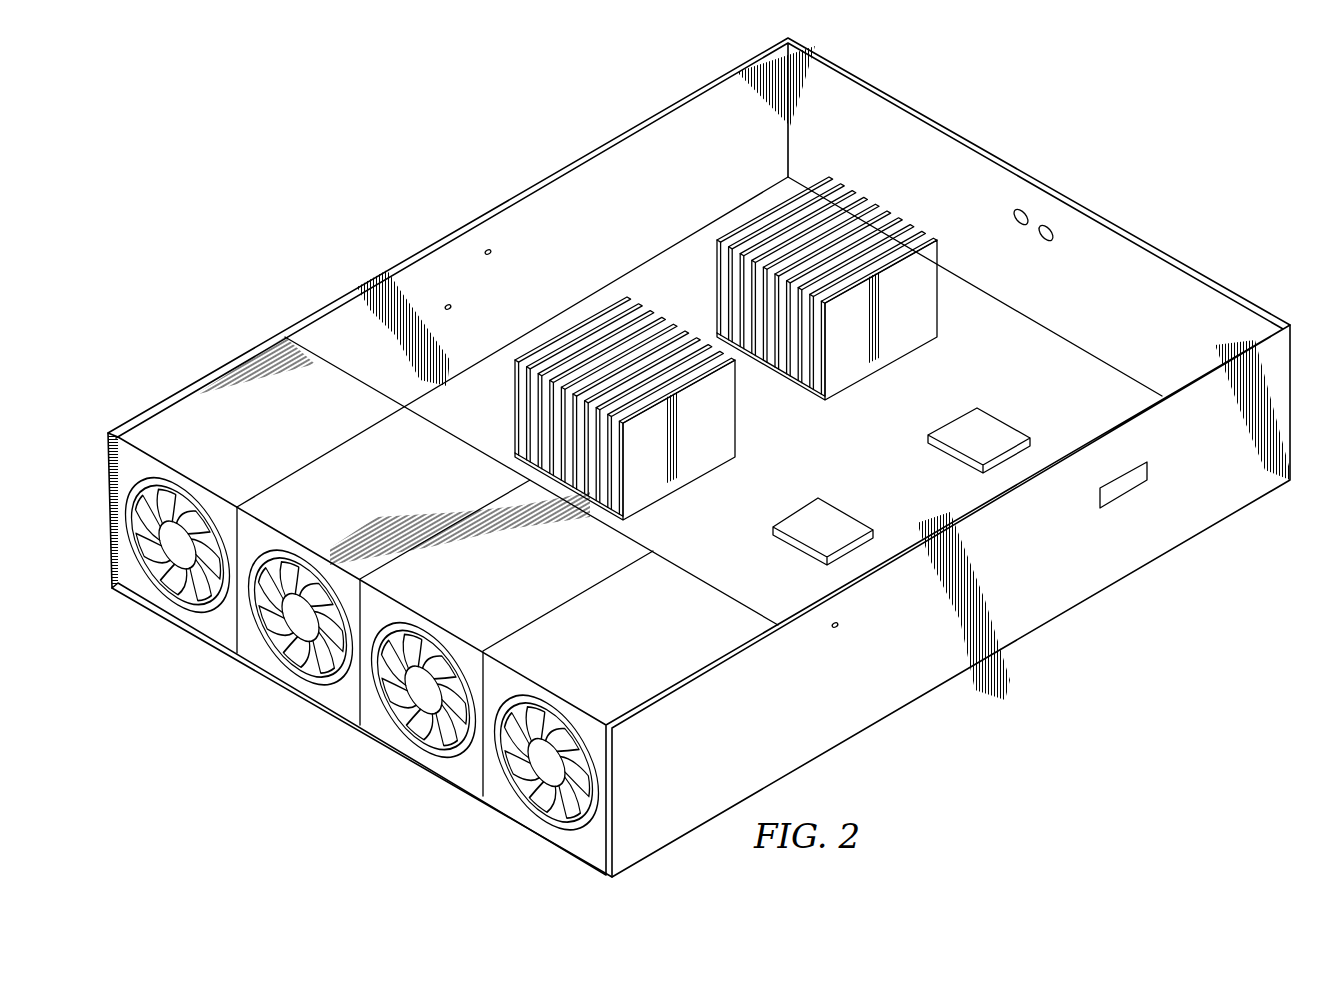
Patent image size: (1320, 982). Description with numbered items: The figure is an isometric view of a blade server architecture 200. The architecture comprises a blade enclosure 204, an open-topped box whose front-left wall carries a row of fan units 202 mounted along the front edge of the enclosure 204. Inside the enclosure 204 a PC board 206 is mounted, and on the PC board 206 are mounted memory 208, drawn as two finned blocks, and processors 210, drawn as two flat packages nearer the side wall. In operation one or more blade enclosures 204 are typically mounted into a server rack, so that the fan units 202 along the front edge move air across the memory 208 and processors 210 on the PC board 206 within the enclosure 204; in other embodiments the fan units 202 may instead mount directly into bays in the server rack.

The blade server architecture 200 is at (436, 188).
The fan units 202 is at (344, 386).
The blade enclosure 204 is at (923, 683).
The PC board 206 is at (1058, 353).
The memory 208 is at (700, 454).
The processors 210 is at (833, 517).